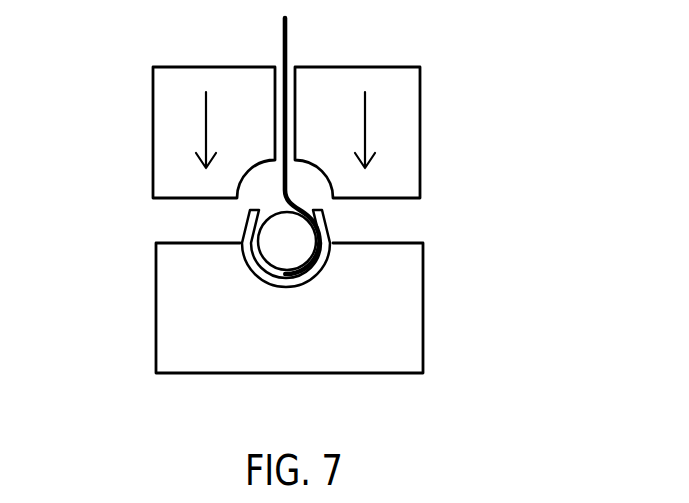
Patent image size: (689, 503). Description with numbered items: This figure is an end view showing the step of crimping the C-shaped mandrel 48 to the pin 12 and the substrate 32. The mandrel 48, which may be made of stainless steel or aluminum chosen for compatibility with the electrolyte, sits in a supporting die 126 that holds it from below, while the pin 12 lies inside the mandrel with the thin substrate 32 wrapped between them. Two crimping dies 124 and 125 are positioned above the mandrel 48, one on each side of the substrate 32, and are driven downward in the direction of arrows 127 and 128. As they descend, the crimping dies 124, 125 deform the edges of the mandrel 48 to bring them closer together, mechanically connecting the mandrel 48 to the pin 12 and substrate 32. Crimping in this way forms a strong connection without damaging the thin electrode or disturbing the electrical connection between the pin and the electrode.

The pin 12 is at (297, 247).
The substrate 32 is at (288, 173).
The mandrel 48 is at (302, 282).
The crimping die 124 is at (183, 200).
The crimping die 125 is at (378, 198).
The supporting die 126 is at (153, 313).
The arrow 127 is at (205, 132).
The arrow 128 is at (365, 125).